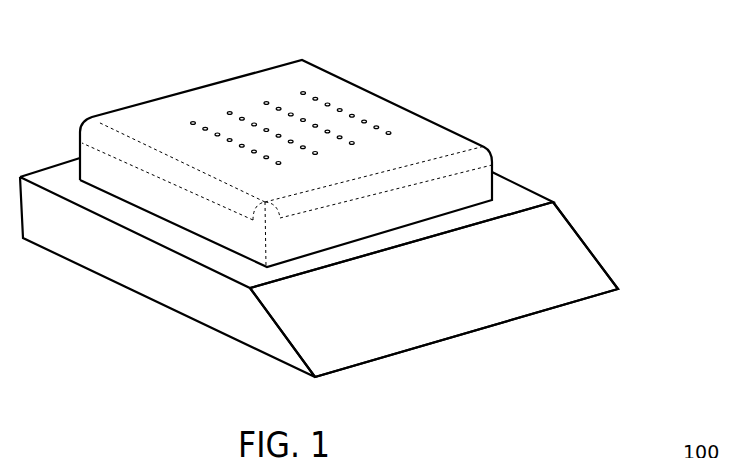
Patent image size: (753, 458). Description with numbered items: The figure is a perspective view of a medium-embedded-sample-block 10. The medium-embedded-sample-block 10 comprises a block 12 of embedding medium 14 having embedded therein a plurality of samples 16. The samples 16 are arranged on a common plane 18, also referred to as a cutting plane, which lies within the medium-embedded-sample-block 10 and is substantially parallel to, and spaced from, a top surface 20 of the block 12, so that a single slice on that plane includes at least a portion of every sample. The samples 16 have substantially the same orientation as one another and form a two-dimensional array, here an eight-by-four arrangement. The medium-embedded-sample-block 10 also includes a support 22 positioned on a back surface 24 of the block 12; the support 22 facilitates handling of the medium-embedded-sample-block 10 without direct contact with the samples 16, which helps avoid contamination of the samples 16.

The medium-embedded-sample-block 10 is at (368, 195).
The block 12 is at (297, 140).
The embedding medium 14 is at (319, 238).
The samples 16 is at (364, 121).
The common plane 18 is at (218, 113).
The top surface 20 is at (354, 173).
The support 22 is at (475, 298).
The back surface 24 is at (453, 220).